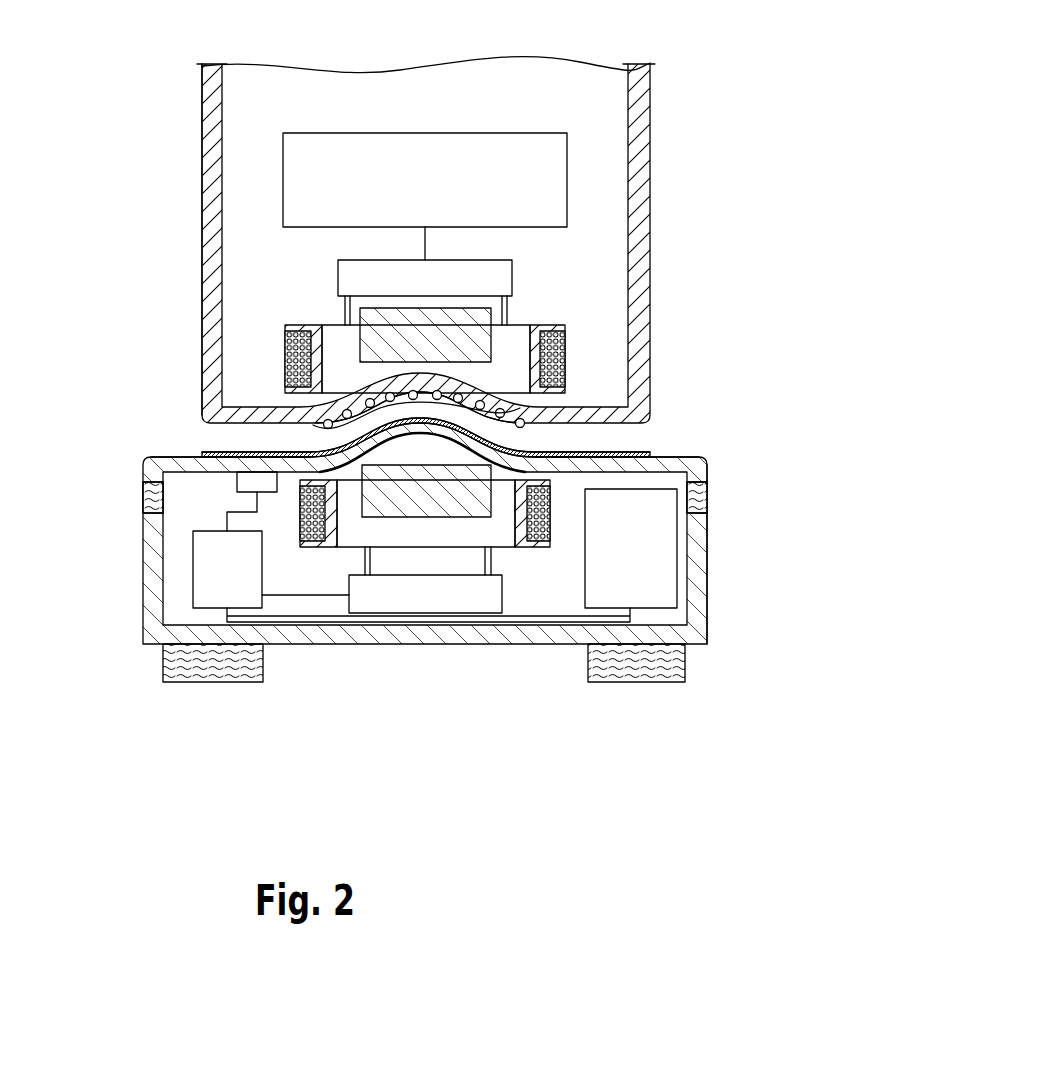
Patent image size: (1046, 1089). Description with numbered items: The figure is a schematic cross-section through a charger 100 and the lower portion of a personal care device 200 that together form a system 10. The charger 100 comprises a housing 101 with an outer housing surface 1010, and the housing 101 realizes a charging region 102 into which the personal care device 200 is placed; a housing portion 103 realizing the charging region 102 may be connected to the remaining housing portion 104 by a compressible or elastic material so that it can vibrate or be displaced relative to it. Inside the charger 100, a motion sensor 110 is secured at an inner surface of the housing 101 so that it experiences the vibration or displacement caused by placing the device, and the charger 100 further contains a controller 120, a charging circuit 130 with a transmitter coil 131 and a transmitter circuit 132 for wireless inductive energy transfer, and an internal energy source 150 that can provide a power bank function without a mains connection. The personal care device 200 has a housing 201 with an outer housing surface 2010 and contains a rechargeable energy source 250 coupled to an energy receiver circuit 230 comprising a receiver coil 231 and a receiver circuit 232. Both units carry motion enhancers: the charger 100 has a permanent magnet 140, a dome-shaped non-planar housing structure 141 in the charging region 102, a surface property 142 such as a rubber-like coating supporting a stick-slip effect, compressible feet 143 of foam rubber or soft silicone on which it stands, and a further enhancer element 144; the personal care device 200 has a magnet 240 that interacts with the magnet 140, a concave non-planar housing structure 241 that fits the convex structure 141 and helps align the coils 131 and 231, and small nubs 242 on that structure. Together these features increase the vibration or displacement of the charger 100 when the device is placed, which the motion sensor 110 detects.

The system 10 is at (692, 76).
The charger 100 is at (772, 548).
The housing 101 is at (152, 553).
The charging region 102 is at (245, 437).
The housing portion 103 is at (737, 469).
The remaining housing portion 104 is at (737, 594).
The motion sensor 110 is at (267, 485).
The controller 120 is at (207, 587).
The charging circuit 130 is at (526, 570).
The transmitter coil 131 is at (318, 545).
The transmitter circuit 132 is at (455, 593).
The permanent magnet 140 is at (413, 505).
The non-planar housing structure 141 is at (533, 438).
The surface property 142 is at (202, 452).
The foot 143 is at (640, 683).
The motion enhancer element 144 is at (143, 497).
The internal energy source 150 is at (655, 600).
The personal care device 200 is at (672, 203).
The housing 201 is at (215, 88).
The outer housing surface 1010 is at (690, 455).
The outer housing surface 2010 is at (192, 150).
The energy receiver circuit 230 is at (305, 292).
The receiver coil 231 is at (285, 340).
The receiver circuit 232 is at (497, 273).
The magnet 240 is at (480, 318).
The non-planar housing structure 241 is at (478, 408).
The smaller non-planar housing structures 242 is at (313, 425).
The rechargeable energy source 250 is at (548, 160).